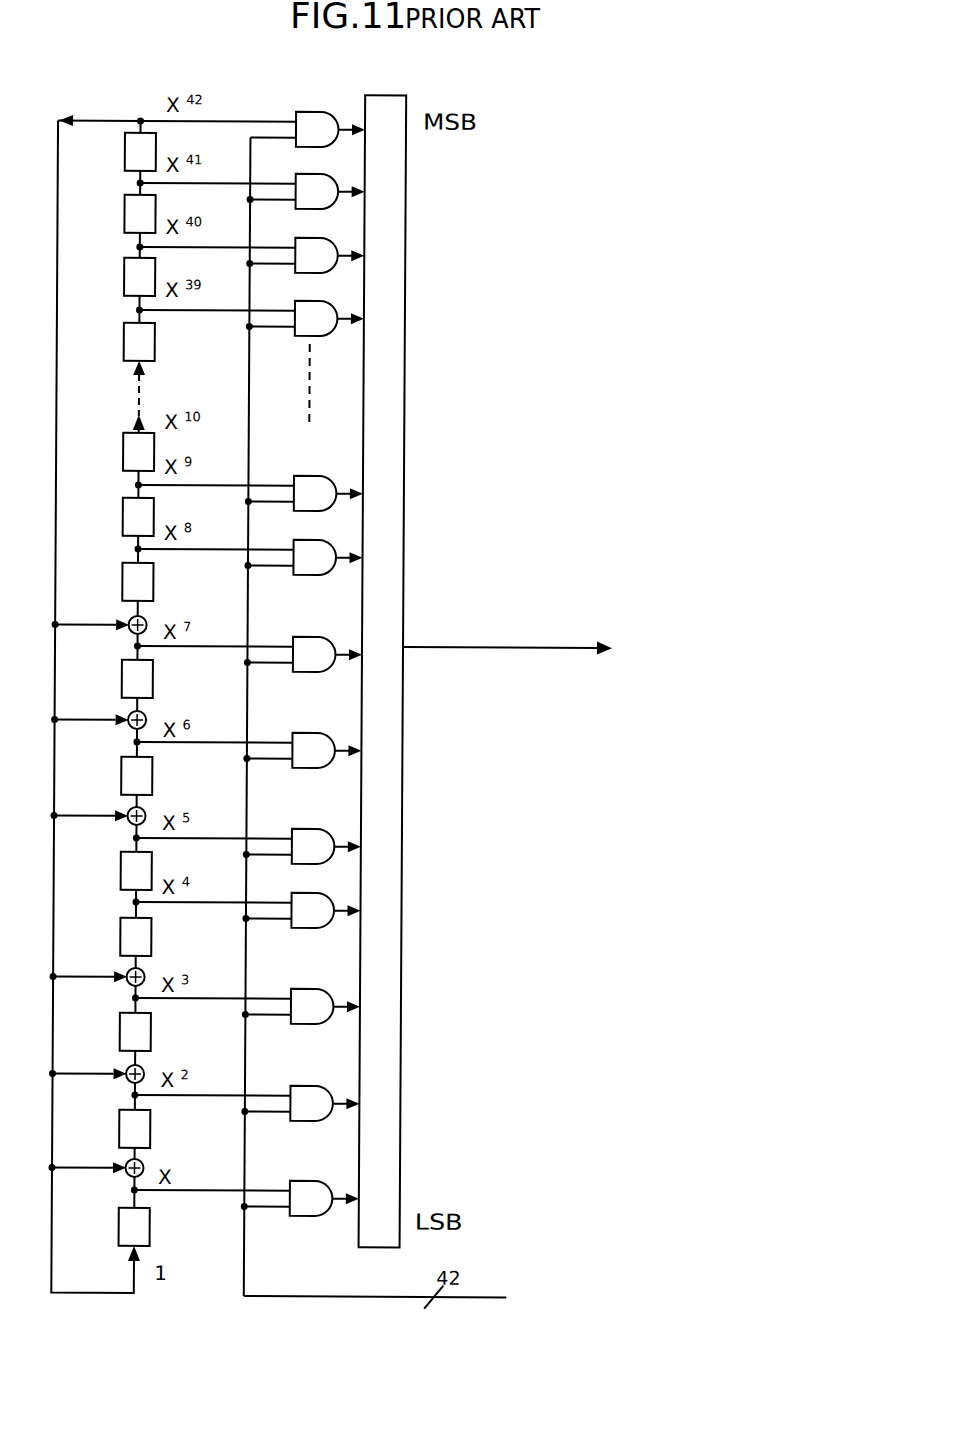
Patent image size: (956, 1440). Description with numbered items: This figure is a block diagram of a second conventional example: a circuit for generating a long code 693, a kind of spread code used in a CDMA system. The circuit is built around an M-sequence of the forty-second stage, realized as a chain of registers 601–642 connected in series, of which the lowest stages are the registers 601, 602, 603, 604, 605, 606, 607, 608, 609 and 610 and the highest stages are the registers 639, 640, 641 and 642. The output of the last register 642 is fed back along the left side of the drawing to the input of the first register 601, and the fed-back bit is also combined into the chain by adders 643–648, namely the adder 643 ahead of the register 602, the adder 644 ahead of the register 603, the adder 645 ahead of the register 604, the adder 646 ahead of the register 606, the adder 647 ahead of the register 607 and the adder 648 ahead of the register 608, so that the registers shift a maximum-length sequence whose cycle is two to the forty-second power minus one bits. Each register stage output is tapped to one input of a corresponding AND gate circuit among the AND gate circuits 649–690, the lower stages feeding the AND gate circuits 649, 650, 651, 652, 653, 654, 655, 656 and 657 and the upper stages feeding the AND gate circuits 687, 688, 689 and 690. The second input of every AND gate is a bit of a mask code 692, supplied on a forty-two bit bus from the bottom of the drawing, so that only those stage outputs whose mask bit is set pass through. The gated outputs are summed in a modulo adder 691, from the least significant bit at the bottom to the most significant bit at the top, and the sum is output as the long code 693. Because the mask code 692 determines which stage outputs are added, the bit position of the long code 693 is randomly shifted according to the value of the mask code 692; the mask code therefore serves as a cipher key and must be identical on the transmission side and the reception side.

The register 601 is at (153, 1222).
The register 602 is at (153, 1124).
The register 603 is at (153, 1029).
The register 604 is at (153, 932).
The register 605 is at (153, 865).
The register 606 is at (153, 770).
The register 607 is at (153, 674).
The register 608 is at (153, 577).
The register 609 is at (153, 512).
The register 610 is at (153, 447).
The register 639 is at (153, 346).
The register 640 is at (153, 273).
The register 641 is at (153, 211).
The register 642 is at (153, 148).
The adder 643 is at (145, 1162).
The adder 644 is at (145, 1067).
The adder 645 is at (145, 971).
The adder 646 is at (145, 810).
The adder 647 is at (145, 714).
The adder 648 is at (145, 618).
The AND gate circuit 649 is at (312, 1190).
The AND gate circuit 650 is at (312, 1090).
The AND gate circuit 651 is at (312, 990).
The AND gate circuit 652 is at (303, 896).
The AND gate circuit 653 is at (312, 835).
The AND gate circuit 654 is at (312, 740).
The AND gate circuit 655 is at (315, 638).
The AND gate circuit 656 is at (307, 546).
The AND gate circuit 657 is at (308, 487).
The AND gate circuit 687 is at (302, 300).
The AND gate circuit 688 is at (302, 238).
The AND gate circuit 689 is at (302, 174).
The AND gate circuit 690 is at (306, 112).
The modulo adder 691 is at (407, 223).
The mask code 692 is at (473, 1296).
The long code 693 is at (477, 645).